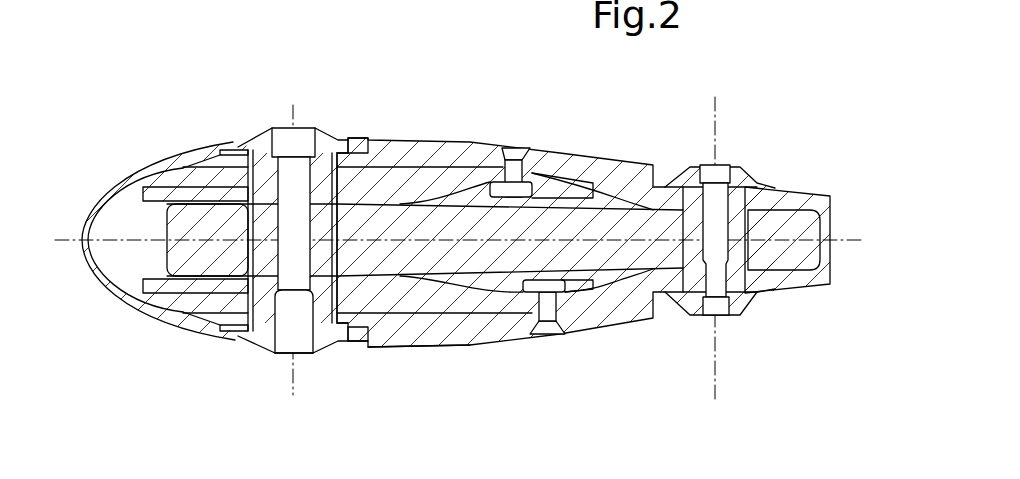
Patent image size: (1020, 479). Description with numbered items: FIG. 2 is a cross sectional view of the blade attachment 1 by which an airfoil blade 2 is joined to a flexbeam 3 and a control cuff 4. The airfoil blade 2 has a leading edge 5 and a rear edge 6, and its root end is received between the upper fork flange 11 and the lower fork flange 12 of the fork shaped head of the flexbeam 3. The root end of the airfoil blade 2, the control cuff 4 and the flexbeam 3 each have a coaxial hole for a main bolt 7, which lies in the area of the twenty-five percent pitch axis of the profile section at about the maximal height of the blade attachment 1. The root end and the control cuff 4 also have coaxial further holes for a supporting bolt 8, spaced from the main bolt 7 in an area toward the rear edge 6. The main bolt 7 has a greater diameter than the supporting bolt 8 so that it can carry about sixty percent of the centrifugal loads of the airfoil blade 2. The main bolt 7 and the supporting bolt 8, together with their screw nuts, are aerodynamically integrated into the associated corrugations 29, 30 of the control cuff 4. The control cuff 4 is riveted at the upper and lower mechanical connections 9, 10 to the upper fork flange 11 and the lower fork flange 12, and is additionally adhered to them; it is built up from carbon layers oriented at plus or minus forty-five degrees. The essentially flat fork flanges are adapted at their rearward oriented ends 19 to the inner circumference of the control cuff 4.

The blade attachment 1 is at (96, 104).
The airfoil blade 2 is at (182, 227).
The flexbeam 3 is at (392, 143).
The control cuff 4 is at (442, 331).
The leading edge 5 is at (158, 257).
The rear edge 6 is at (818, 230).
The main bolt 7 is at (284, 132).
The supporting bolt 8 is at (718, 166).
The upper mechanical connection 9 is at (514, 150).
The lower mechanical connection 10 is at (540, 336).
The upper fork flange 11 is at (425, 242).
The lower fork flange 12 is at (174, 314).
The rearward oriented ends 19 is at (566, 175).
The corrugation 29 is at (670, 168).
The corrugation 30 is at (360, 138).